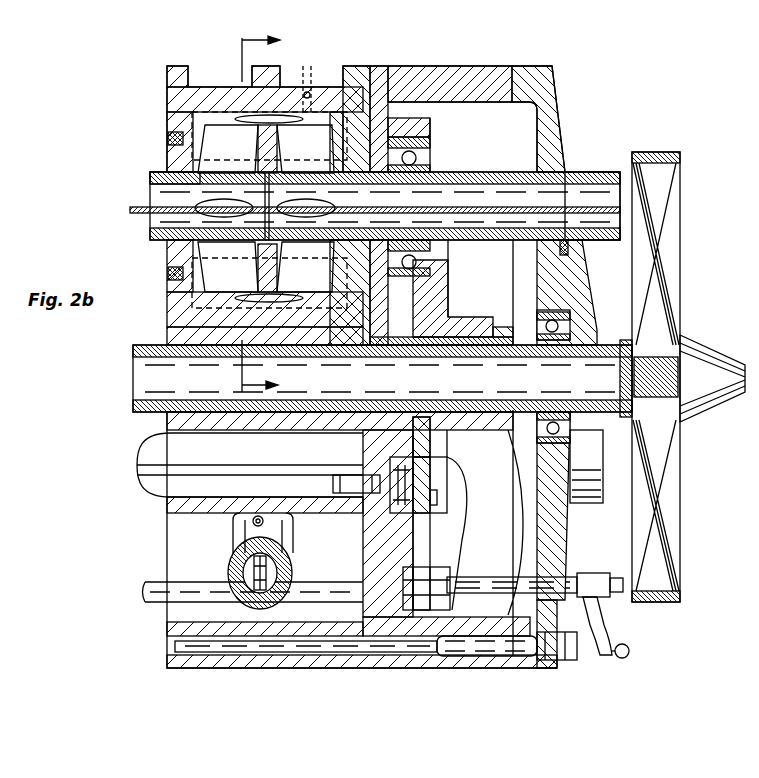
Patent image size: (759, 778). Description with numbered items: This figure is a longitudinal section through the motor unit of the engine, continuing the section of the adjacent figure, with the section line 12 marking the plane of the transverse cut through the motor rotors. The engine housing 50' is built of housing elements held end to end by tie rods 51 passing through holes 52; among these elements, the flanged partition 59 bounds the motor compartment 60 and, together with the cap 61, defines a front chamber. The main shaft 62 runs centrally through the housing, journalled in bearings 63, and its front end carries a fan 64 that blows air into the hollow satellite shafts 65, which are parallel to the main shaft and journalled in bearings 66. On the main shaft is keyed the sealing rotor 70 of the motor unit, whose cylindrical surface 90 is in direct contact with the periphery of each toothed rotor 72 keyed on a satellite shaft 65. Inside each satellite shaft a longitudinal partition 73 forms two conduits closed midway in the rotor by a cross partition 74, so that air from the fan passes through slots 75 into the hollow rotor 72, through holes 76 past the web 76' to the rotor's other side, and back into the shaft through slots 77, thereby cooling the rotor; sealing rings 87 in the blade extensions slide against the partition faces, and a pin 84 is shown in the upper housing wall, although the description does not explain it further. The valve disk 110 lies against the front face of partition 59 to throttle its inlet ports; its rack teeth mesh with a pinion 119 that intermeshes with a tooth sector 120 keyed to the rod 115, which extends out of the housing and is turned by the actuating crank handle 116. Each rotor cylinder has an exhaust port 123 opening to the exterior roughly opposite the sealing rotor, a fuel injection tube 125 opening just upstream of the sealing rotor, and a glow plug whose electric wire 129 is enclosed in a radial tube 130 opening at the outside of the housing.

The section line 12 is at (261, 214).
The engine housing 50' is at (349, 539).
The tie rod 51 is at (463, 655).
The hole 52 is at (390, 652).
The flanged partition 59 is at (418, 72).
The motor compartment 60 is at (372, 95).
The cap 61 is at (553, 97).
The main shaft 62 is at (627, 330).
The bearing 63 is at (593, 287).
The fan 64 is at (672, 472).
The satellite shaft 65 is at (575, 172).
The bearing 66 is at (430, 148).
The sealing rotor 70 is at (180, 420).
The toothed rotor 72 is at (170, 113).
The longitudinally extending partition 73 is at (423, 210).
The cross partition 74 is at (270, 222).
The slot 75 is at (300, 205).
The hole 76 is at (230, 208).
The web 76' is at (269, 210).
The slot 77 is at (205, 178).
The pin 84 is at (296, 92).
The sealing ring 87 is at (170, 140).
The cylindrical surface 90 is at (170, 95).
The valve disk 110 is at (437, 292).
The rod 115 is at (190, 590).
The actuating crank handle 116 is at (610, 632).
The pinion 119 is at (445, 487).
The tooth sector 120 is at (425, 540).
The exhaust port 123 is at (208, 73).
The fuel injection tube 125 is at (290, 545).
The electric wire 129 is at (290, 563).
The tube 130 is at (293, 524).